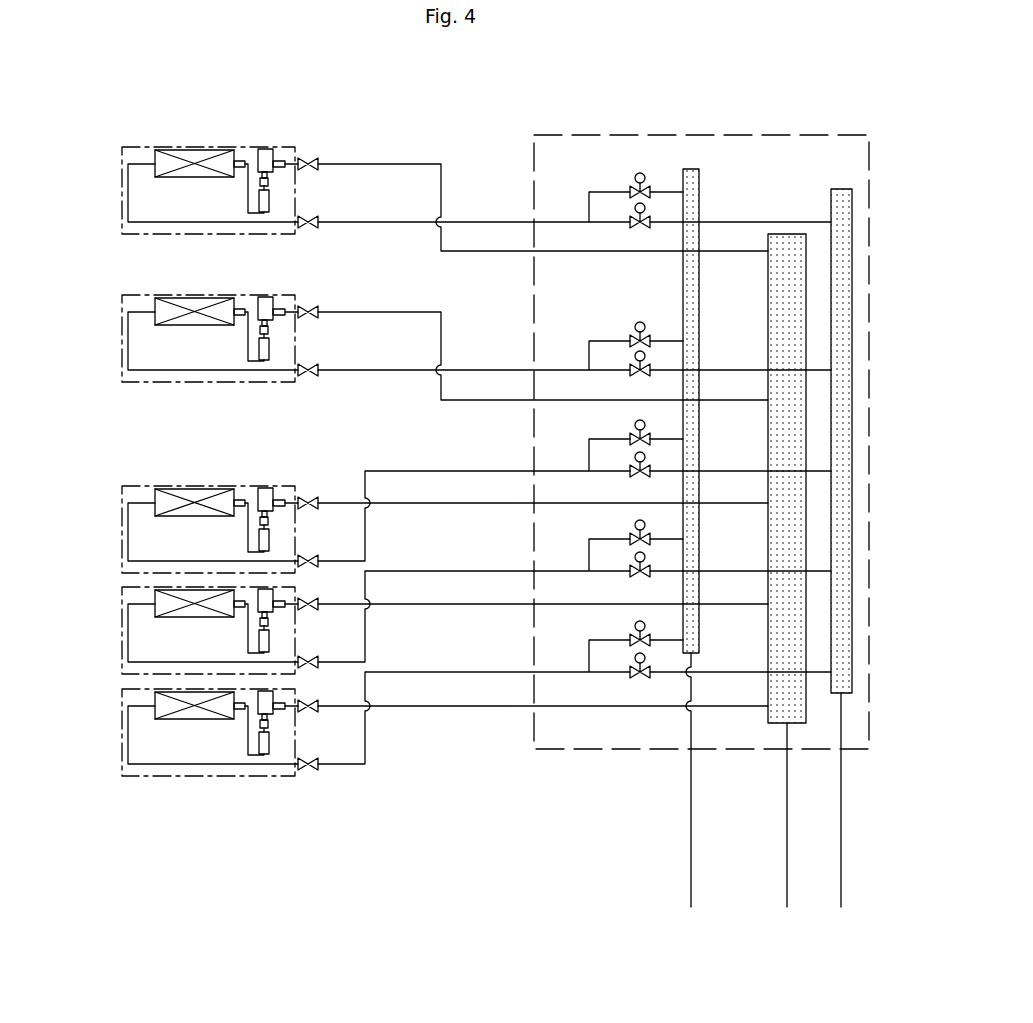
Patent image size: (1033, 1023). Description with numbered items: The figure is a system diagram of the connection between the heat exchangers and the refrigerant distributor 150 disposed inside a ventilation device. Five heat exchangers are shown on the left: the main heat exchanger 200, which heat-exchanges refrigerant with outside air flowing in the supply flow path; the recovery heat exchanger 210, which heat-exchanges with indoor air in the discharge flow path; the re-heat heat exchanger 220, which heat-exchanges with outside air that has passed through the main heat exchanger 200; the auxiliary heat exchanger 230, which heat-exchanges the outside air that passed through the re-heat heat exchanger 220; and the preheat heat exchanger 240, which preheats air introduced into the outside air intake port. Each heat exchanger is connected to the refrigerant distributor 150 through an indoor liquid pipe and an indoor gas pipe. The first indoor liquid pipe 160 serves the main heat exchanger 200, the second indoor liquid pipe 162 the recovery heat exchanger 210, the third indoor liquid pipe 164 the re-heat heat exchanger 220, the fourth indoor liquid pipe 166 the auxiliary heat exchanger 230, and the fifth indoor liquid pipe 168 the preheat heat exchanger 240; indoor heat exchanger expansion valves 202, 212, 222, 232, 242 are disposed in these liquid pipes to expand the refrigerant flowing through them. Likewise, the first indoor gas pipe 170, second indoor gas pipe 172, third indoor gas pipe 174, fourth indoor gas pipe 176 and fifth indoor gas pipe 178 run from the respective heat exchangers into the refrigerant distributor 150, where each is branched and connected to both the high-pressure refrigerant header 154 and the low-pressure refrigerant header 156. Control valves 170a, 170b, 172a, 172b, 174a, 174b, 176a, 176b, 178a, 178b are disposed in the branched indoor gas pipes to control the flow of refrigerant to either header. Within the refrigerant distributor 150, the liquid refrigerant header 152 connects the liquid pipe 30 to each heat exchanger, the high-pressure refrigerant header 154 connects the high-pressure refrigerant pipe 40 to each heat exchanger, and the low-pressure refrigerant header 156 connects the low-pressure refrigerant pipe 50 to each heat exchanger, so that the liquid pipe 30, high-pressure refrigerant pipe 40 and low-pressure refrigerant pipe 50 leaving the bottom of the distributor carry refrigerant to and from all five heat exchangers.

The liquid pipe 30 is at (787, 907).
The high-pressure refrigerant pipe 40 is at (691, 907).
The low-pressure refrigerant pipe 50 is at (841, 907).
The refrigerant distributor 150 is at (870, 322).
The liquid refrigerant header 152 is at (782, 234).
The high-pressure refrigerant header 154 is at (690, 169).
The low-pressure refrigerant header 156 is at (841, 388).
The first indoor liquid pipe 160 is at (485, 504).
The second indoor liquid pipe 162 is at (357, 312).
The third indoor liquid pipe 164 is at (398, 605).
The fourth indoor liquid pipe 166 is at (470, 707).
The fifth indoor liquid pipe 168 is at (357, 164).
The first indoor gas pipe 170 is at (455, 471).
The control valve 170a is at (633, 471).
The control valve 170b is at (633, 439).
The second indoor gas pipe 172 is at (357, 371).
The control valve 172a is at (633, 370).
The control valve 172b is at (633, 341).
The third indoor gas pipe 174 is at (392, 571).
The control valve 174a is at (633, 571).
The control valve 174b is at (633, 539).
The fourth indoor gas pipe 176 is at (469, 672).
The control valve 176a is at (633, 672).
The control valve 176b is at (633, 640).
The fifth indoor gas pipe 178 is at (357, 222).
The control valve 178a is at (633, 222).
The control valve 178b is at (633, 192).
The main heat exchanger 200 is at (187, 503).
The indoor heat exchanger expansion valve 202 is at (265, 496).
The recovery heat exchanger 210 is at (187, 310).
The indoor heat exchanger expansion valve 212 is at (265, 304).
The re-heat heat exchanger 220 is at (201, 621).
The indoor heat exchanger expansion valve 222 is at (266, 602).
The auxiliary heat exchanger 230 is at (201, 722).
The indoor heat exchanger expansion valve 232 is at (266, 702).
The preheat heat exchanger 240 is at (187, 163).
The indoor heat exchanger expansion valve 242 is at (265, 157).